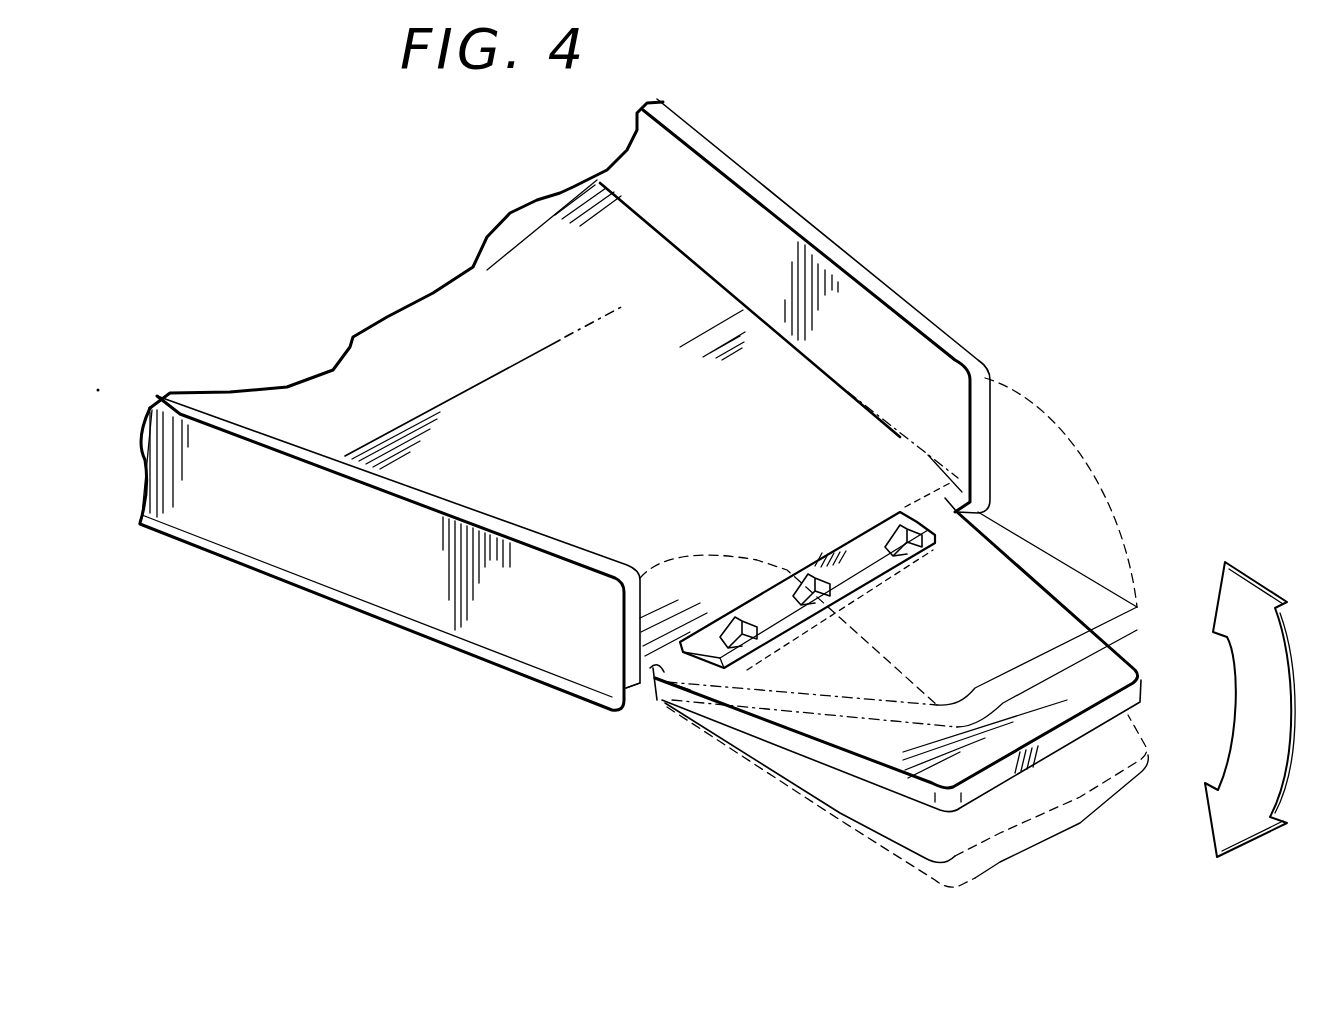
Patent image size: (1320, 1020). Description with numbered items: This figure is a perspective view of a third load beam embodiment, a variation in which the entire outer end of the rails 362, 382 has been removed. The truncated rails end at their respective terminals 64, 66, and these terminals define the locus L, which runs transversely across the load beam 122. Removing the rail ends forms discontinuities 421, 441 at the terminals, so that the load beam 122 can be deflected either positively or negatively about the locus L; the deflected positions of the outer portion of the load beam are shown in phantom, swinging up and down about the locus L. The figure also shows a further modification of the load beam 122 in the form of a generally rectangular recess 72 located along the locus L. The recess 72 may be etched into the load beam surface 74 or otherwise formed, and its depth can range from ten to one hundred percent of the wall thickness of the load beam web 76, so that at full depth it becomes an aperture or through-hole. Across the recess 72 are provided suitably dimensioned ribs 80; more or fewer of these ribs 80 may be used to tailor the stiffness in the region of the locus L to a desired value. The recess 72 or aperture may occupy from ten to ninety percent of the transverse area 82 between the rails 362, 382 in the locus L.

The load beam surface 74 is at (626, 444).
The load beam web 76 is at (584, 251).
The load beam 122 is at (436, 293).
The rail 362 is at (540, 624).
The rail 382 is at (940, 382).
The recess 72 is at (772, 612).
The ribs 80 is at (806, 583).
The terminal 66 is at (983, 440).
The discontinuity 441 is at (1007, 513).
The transverse area 82 is at (938, 522).
The terminal 64 is at (630, 660).
The discontinuity 421 is at (655, 672).
The locus L is at (678, 668).